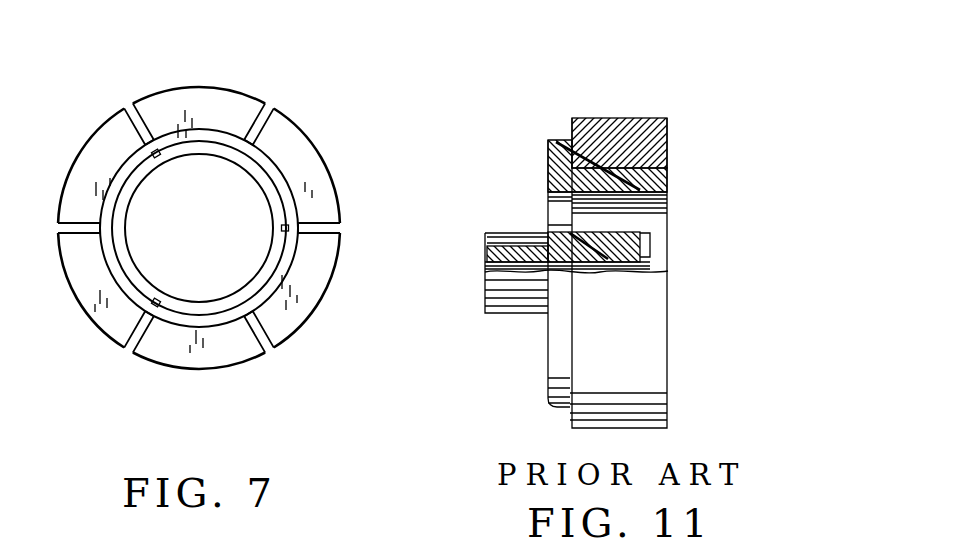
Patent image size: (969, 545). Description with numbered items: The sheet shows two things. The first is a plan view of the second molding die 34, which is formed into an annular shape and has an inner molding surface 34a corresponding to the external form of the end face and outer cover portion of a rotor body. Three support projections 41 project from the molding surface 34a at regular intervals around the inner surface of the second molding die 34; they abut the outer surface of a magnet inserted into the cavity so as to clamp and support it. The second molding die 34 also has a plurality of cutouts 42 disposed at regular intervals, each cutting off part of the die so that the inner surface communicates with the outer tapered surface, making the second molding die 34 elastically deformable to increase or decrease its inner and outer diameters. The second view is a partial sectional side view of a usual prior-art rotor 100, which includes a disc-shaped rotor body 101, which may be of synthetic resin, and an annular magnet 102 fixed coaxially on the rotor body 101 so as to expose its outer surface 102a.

In FIG. 7, the second molding die 34 is at (322, 151).
In FIG. 7, the molding surface 34a is at (126, 266).
In FIG. 7, the support projections 41 is at (157, 150).
In FIG. 7, the cutouts 42 is at (50, 223).
In FIG. 11, the rotor 100 is at (708, 158).
In FIG. 11, the rotor body 101 is at (668, 173).
In FIG. 11, the magnet 102 is at (667, 128).
In FIG. 11, the outer surface 102a is at (625, 118).